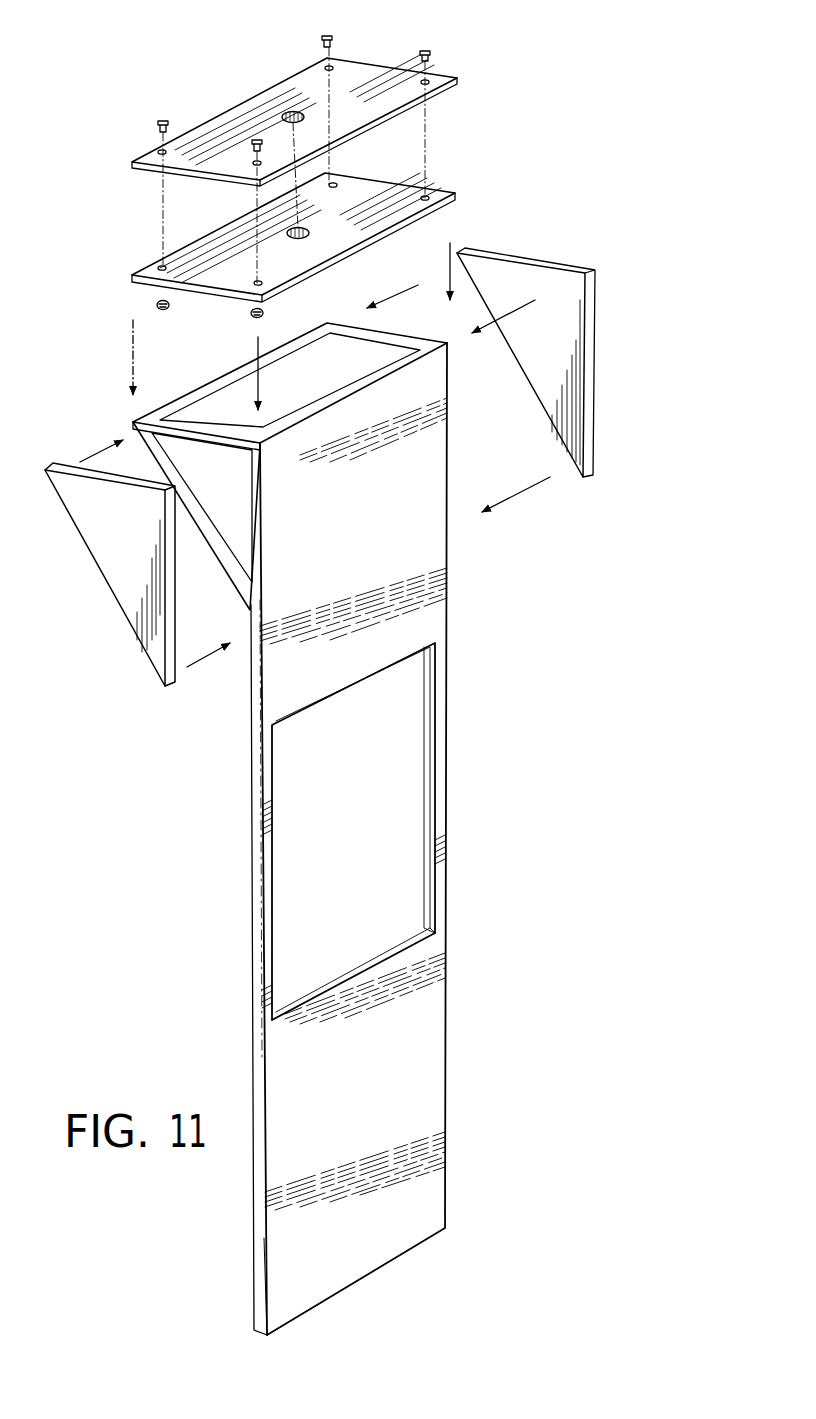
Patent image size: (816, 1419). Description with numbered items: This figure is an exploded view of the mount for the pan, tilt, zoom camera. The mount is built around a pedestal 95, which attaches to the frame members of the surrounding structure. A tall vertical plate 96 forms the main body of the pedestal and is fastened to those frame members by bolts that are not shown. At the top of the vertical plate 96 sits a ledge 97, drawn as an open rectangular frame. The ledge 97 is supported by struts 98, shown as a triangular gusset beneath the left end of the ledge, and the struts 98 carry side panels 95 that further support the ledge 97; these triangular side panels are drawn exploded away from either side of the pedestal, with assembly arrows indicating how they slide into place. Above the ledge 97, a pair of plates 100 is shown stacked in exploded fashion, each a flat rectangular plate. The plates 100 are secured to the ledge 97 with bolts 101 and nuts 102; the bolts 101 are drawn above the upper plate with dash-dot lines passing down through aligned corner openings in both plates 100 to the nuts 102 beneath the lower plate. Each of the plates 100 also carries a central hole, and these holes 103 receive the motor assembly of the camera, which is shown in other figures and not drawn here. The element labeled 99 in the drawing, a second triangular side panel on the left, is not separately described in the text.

The pedestal 95 is at (617, 272).
The vertical plate 96 is at (313, 1146).
The ledge 97 is at (212, 363).
The struts 98 is at (205, 509).
The left triangular side plate 99 is at (133, 617).
The plates 100 is at (372, 75).
The bolts 101 is at (434, 53).
The nuts 102 is at (265, 315).
The holes 103 is at (290, 112).